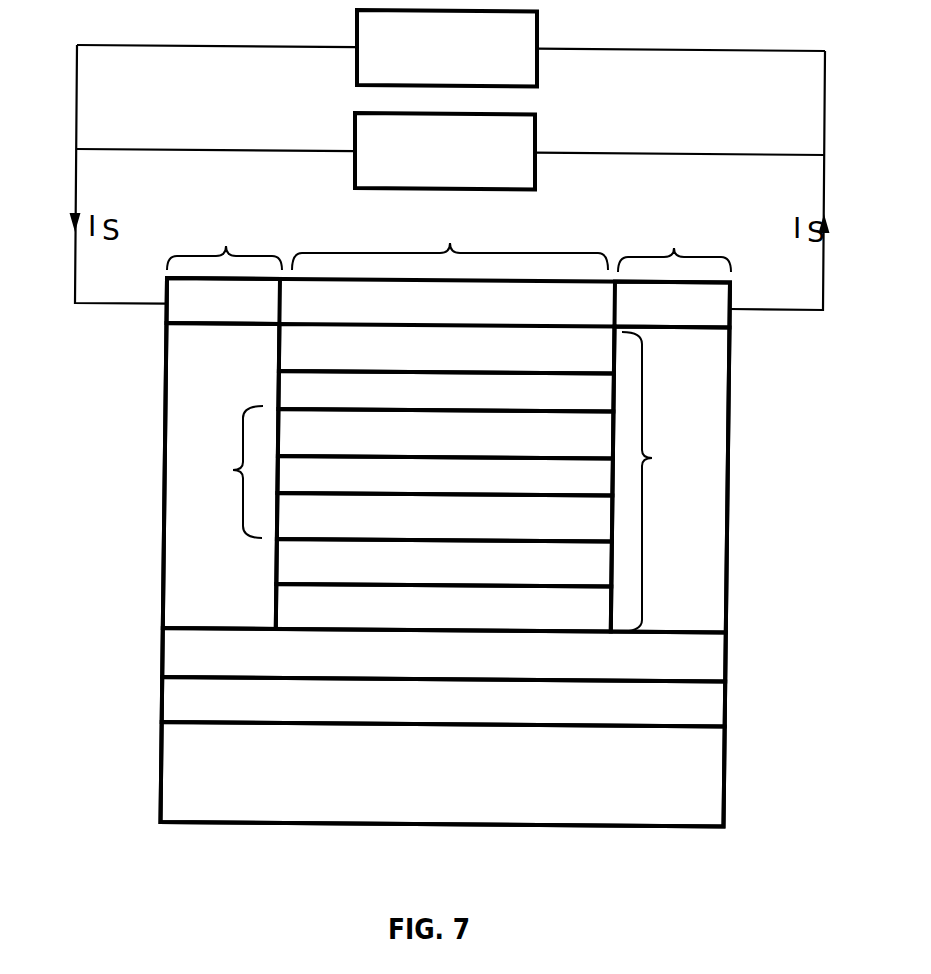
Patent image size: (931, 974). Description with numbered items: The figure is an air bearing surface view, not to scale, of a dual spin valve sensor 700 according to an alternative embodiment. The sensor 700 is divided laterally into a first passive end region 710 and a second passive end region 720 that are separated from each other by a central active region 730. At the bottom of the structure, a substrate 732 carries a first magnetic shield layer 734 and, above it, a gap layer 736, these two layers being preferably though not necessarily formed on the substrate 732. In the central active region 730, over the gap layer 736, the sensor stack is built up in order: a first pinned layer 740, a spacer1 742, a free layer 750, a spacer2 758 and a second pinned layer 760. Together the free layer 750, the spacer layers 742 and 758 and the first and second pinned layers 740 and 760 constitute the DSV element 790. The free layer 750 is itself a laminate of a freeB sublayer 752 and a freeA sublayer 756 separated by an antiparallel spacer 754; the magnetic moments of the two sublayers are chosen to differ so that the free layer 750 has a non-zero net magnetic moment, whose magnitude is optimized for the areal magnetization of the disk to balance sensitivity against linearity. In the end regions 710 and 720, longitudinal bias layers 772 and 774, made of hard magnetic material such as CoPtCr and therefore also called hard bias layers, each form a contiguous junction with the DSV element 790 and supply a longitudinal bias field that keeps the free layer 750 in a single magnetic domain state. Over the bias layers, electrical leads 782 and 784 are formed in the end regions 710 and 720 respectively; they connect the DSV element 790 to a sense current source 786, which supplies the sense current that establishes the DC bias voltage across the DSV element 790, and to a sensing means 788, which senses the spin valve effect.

The dual spin valve sensor 700 is at (126, 908).
The passive end region 710 is at (224, 239).
The passive end region 720 is at (674, 241).
The central active region 730 is at (450, 240).
The substrate 732 is at (202, 773).
The first magnetic shield layer 734 is at (197, 703).
The gap layer 736 is at (192, 658).
The first pinned layer 740 is at (310, 605).
The spacer1 742 is at (295, 565).
The free layer 750 is at (232, 470).
The freeB sublayer 752 is at (595, 521).
The antiparallel spacer 754 is at (603, 487).
The freeA sublayer 756 is at (583, 432).
The spacer2 758 is at (298, 390).
The second pinned layer 760 is at (290, 362).
The longitudinal bias layer 772 is at (187, 347).
The longitudinal bias layer 774 is at (700, 364).
The electrical lead 782 is at (267, 302).
The electrical lead 784 is at (633, 303).
The sense current source 786 is at (537, 72).
The sensing means 788 is at (355, 123).
The DSV element 790 is at (653, 457).